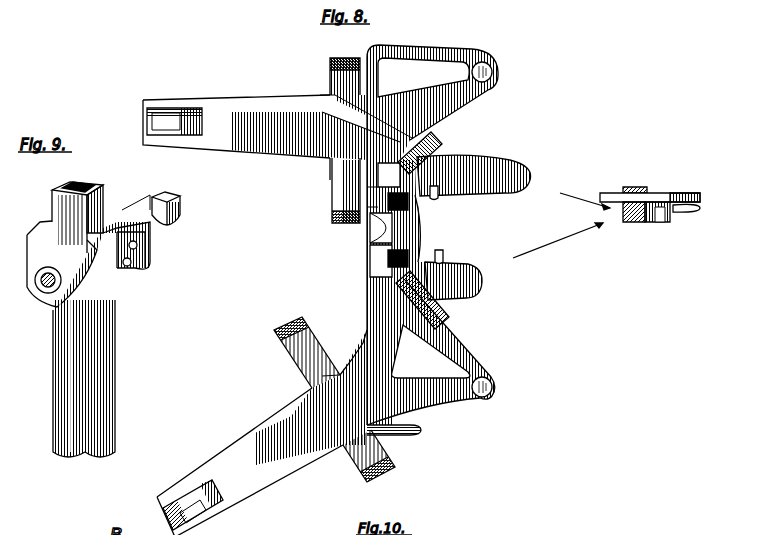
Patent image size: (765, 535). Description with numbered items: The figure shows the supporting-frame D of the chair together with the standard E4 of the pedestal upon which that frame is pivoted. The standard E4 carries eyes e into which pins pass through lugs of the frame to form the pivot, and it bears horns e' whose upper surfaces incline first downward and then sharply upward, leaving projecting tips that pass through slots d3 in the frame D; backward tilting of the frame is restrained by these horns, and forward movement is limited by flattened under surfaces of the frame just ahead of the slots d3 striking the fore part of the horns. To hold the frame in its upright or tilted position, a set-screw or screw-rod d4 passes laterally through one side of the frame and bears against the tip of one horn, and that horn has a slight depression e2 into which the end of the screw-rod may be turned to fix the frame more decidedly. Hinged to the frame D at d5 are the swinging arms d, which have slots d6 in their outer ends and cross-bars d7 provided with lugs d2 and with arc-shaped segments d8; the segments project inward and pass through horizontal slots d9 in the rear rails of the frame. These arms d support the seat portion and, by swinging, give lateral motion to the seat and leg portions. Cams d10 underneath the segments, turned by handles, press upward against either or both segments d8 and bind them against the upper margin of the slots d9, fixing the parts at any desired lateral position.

In FIG. 8, the swinging arms d is at (271, 315).
In FIG. 8, the lugs d2 is at (333, 62).
In FIG. 8, the slots d3 is at (404, 202).
In FIG. 8, the set-screw or screw-rod d4 is at (396, 366).
In FIG. 8, the hinge point of swinging arms d5 is at (498, 72).
In FIG. 8, the slots d6 is at (160, 125).
In FIG. 8, the cross-bars d7 is at (331, 180).
In FIG. 8, the arc-shaped segments d8 is at (533, 182).
In FIG. 8, the horizontal slots d9 is at (440, 157).
In FIG. 8, the cams d10 is at (438, 195).
In FIG. 8, the supporting-frame D is at (375, 252).
In FIG. 9, the eyes e is at (39, 294).
In FIG. 9, the horns e' is at (144, 239).
In FIG. 9, the depression e2 is at (138, 245).
In FIG. 9, the standard E4 is at (94, 378).